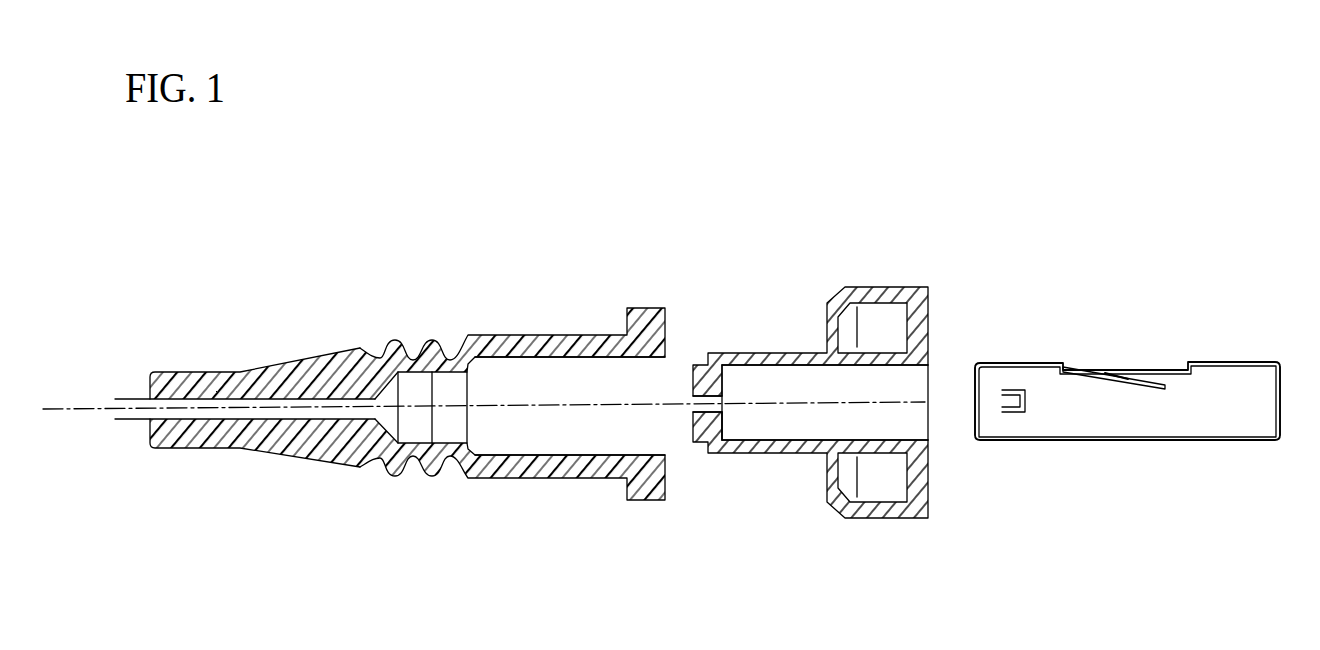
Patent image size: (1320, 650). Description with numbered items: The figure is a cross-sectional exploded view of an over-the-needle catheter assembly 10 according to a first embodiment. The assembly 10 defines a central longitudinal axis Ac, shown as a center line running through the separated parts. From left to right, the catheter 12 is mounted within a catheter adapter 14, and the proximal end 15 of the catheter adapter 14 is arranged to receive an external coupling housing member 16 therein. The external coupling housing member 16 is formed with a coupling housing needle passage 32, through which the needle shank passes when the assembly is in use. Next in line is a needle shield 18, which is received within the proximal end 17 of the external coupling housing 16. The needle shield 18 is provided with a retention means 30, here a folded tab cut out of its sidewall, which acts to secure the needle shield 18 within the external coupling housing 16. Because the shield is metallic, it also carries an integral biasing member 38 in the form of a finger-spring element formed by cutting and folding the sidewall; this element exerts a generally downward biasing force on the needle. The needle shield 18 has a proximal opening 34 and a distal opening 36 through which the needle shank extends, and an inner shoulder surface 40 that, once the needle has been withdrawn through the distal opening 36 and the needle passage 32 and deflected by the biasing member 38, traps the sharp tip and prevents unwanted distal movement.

The over-the-needle catheter assembly 10 is at (1126, 109).
The central longitudinal axis Ac is at (63, 408).
The catheter 12 is at (151, 393).
The catheter adapter 14 is at (298, 357).
The proximal end of the catheter adapter 15 is at (625, 378).
The external coupling housing member 16 is at (802, 352).
The proximal end of the external coupling housing 17 is at (907, 385).
The needle shield 18 is at (1210, 362).
The retention means 30 is at (1010, 390).
The coupling housing needle passage 32 is at (693, 398).
The proximal opening 34 is at (1280, 400).
The distal opening 36 is at (975, 400).
The biasing member 38 is at (1148, 378).
The inner shoulder surface 40 is at (722, 418).